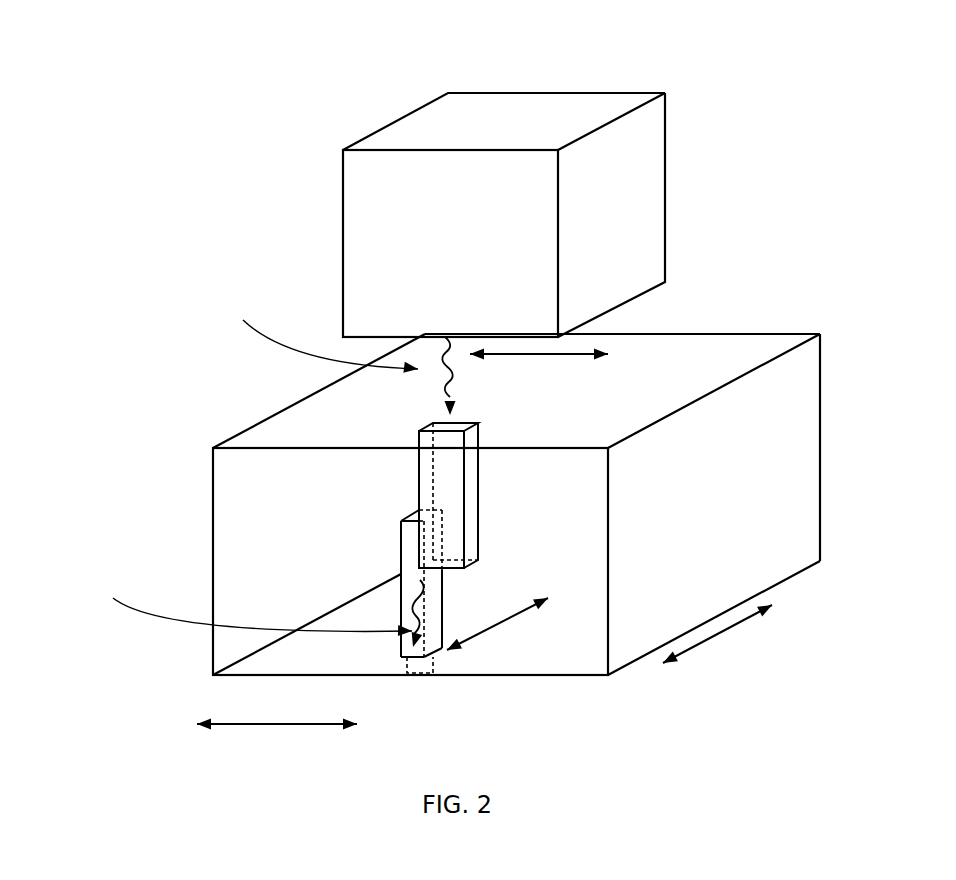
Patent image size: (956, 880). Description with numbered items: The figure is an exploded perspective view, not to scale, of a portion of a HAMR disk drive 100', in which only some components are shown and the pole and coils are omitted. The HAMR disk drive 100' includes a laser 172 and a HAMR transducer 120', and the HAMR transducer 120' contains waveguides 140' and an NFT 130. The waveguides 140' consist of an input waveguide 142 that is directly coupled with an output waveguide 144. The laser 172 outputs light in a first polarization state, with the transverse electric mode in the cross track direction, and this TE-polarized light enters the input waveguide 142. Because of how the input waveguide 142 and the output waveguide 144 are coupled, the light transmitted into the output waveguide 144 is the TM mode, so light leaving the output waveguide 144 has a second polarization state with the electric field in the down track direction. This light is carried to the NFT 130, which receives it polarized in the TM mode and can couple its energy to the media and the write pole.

The HAMR disk drive 100' is at (446, 385).
The laser 172 is at (504, 215).
The HAMR transducer 120' is at (516, 504).
The waveguides 140' is at (287, 506).
The input waveguide 142 is at (419, 433).
The output waveguide 144 is at (401, 562).
The NFT 130 is at (432, 668).